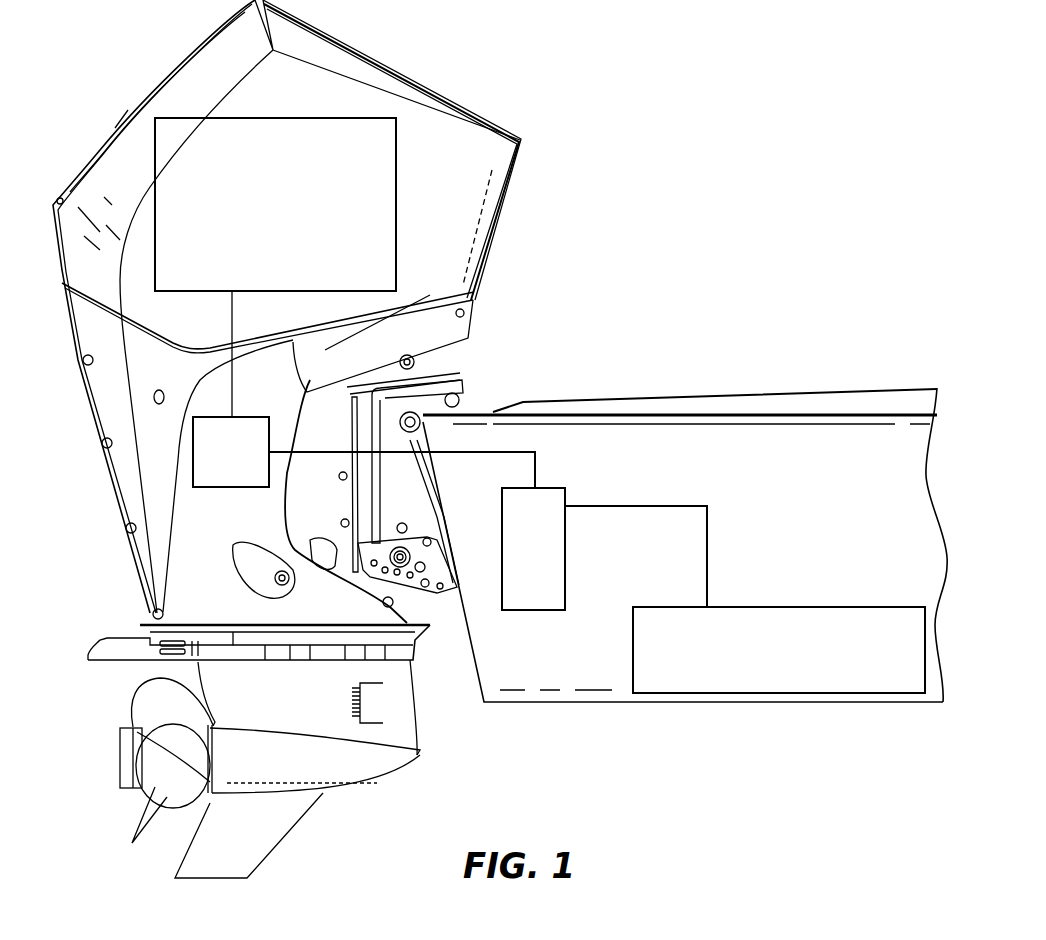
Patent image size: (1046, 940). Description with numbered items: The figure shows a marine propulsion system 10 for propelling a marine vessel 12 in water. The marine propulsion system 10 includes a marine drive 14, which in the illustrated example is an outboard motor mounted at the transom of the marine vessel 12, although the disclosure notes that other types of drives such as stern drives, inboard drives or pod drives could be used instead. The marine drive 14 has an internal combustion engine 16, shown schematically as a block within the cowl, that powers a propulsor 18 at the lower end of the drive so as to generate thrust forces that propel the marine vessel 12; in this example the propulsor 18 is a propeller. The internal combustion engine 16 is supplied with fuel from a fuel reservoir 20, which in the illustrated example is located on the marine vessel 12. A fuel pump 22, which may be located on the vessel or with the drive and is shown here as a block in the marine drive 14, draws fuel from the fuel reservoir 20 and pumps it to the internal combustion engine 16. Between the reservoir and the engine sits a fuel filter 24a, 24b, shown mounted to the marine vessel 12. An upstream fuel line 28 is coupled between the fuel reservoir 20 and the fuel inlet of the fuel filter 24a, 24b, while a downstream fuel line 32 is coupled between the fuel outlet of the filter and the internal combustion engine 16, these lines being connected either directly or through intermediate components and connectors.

The marine propulsion system 10 is at (714, 103).
The marine vessel 12 is at (903, 393).
The marine drive 14 is at (431, 80).
The internal combustion engine 16 is at (406, 203).
The propulsor 18 is at (130, 812).
The fuel reservoir 20 is at (902, 600).
The fuel pump 22 is at (191, 445).
The fuel filter 24a is at (587, 475).
The fuel filter 24b is at (566, 487).
The upstream fuel line 28 is at (665, 506).
The downstream fuel line 32 is at (473, 452).